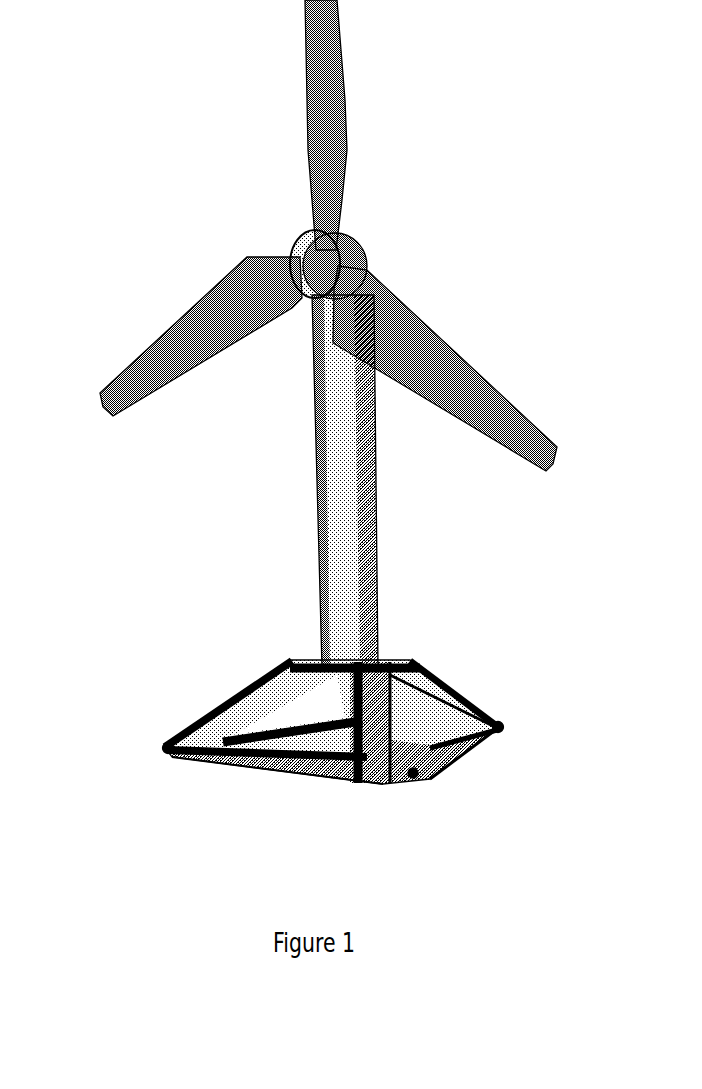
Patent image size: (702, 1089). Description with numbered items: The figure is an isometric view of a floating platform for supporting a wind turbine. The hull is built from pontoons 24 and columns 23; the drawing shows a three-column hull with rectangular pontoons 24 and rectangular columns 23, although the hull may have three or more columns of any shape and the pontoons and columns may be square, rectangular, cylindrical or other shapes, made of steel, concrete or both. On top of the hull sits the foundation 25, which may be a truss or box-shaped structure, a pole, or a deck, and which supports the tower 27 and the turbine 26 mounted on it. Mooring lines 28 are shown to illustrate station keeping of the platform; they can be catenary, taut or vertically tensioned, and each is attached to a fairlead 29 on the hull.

The column 23 is at (335, 716).
The pontoon 24 is at (442, 882).
The foundation 25 is at (250, 718).
The turbine 26 is at (355, 264).
The tower 27 is at (361, 481).
The mooring lines 28 is at (165, 751).
The fairlead 29 is at (560, 762).